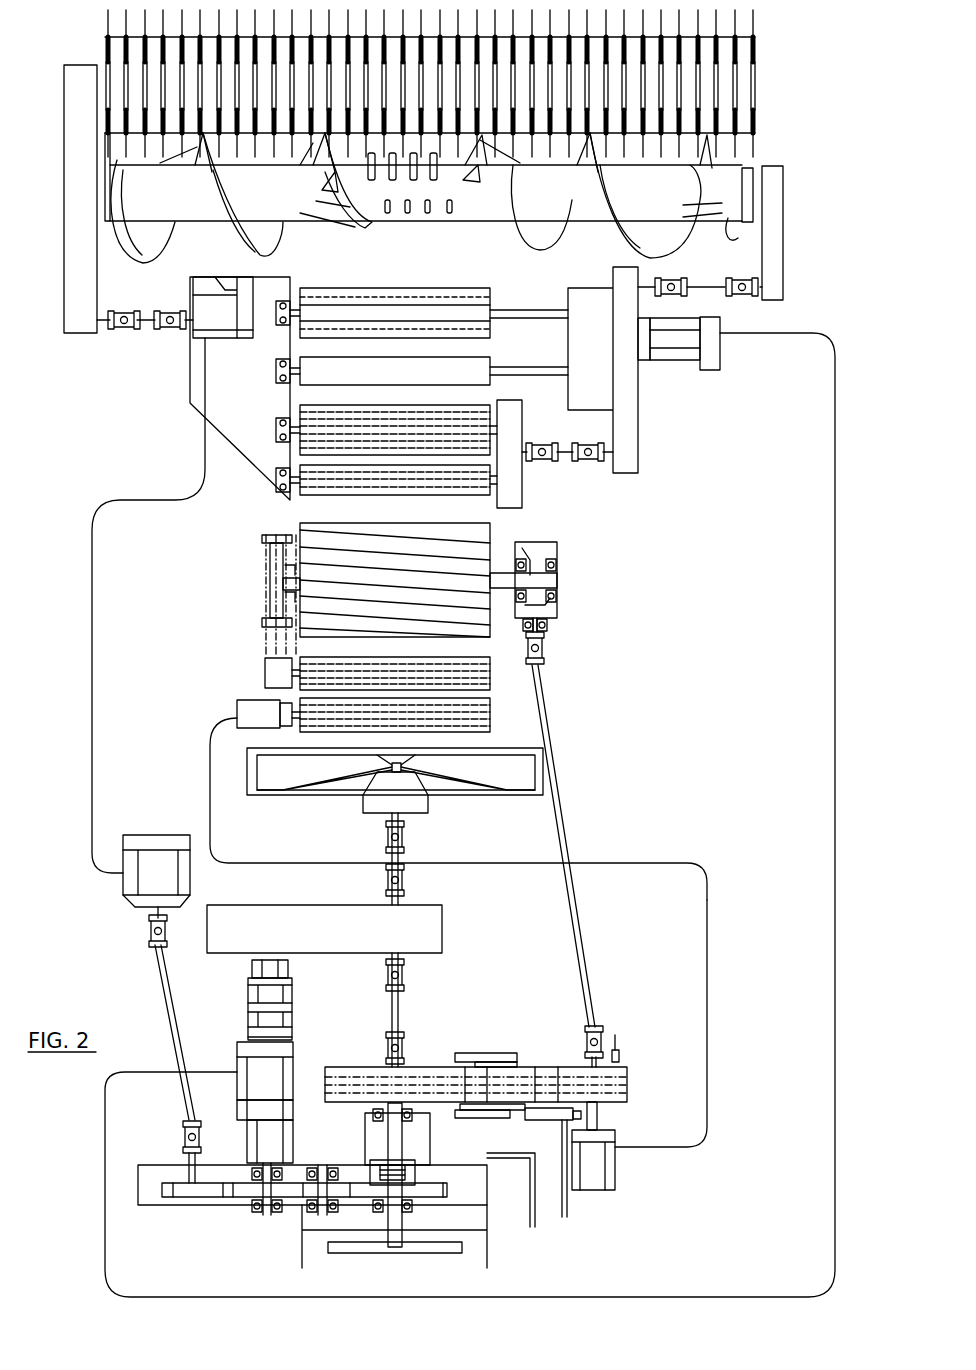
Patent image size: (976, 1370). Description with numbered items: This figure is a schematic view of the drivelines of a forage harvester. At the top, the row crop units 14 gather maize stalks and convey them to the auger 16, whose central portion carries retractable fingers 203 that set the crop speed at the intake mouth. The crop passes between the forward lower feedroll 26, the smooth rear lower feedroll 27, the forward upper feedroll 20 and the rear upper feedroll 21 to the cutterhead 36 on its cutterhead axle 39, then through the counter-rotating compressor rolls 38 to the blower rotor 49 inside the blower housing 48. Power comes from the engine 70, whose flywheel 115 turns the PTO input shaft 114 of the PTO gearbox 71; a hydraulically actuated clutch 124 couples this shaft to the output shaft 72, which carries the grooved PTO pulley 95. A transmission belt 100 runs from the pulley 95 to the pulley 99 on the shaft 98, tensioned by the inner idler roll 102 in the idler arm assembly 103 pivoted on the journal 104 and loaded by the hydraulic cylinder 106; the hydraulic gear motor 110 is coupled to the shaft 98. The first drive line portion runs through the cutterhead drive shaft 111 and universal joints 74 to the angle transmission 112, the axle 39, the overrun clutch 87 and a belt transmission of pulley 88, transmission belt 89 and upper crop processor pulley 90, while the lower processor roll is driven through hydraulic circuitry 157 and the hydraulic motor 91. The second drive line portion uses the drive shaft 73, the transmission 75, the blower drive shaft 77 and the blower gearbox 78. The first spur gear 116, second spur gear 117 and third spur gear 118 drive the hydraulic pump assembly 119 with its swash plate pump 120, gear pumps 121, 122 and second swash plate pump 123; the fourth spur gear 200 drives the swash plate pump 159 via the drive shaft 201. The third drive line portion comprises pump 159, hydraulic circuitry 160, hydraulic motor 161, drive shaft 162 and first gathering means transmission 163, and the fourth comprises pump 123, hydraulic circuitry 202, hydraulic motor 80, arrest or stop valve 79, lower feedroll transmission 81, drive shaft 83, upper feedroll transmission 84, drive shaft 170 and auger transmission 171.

The row crop units 14 is at (758, 52).
The auger 16 is at (760, 167).
The forward upper feedroll 20 is at (303, 420).
The rear upper feedroll 21 is at (333, 488).
The forward lower feedroll 26 is at (496, 321).
The smooth rear lower feedroll 27 is at (297, 382).
The cutterhead 36 is at (492, 532).
The compressor rolls 38 is at (487, 672).
The cutterhead axle 39 is at (557, 578).
The blower housing 48 is at (537, 797).
The blower rotor 49 is at (503, 796).
The engine 70 is at (310, 1250).
The PTO gearbox 71 is at (219, 1207).
The output shaft 72 is at (390, 1107).
The drive shaft 73 is at (402, 1008).
The universal joint 74 is at (548, 642).
The transmission 75 is at (442, 922).
The blower drive shaft 77 is at (402, 858).
The blower gearbox 78 is at (368, 808).
The arrest or stop valve 79 is at (722, 368).
The hydraulic motor 80 is at (668, 357).
The lower feedroll transmission 81 is at (633, 467).
The drive shaft 83 is at (566, 460).
The upper feedroll transmission 84 is at (522, 497).
The overrun clutch 87 is at (273, 580).
The pulley 88 is at (262, 627).
The transmission belt 89 is at (267, 638).
The upper crop processor pulley 90 is at (265, 675).
The hydraulic motor 91 is at (237, 708).
The grooved PTO pulley 95 is at (348, 1067).
The shaft 98 is at (597, 1117).
The pulley 99 is at (627, 1090).
The transmission belt 100 is at (545, 1068).
The inner idler roll 102 is at (528, 1067).
The idler arm assembly 103 is at (490, 1053).
The journal 104 is at (460, 1120).
The hydraulic cylinder 106 is at (548, 1121).
The hydraulic gear motor 110 is at (615, 1168).
The cutterhead drive shaft 111 is at (575, 882).
The angle transmission 112 is at (560, 603).
The PTO input shaft 114 is at (397, 1247).
The flywheel 115 is at (334, 1253).
The first spur gear 116 is at (445, 1192).
The second spur gear 117 is at (312, 1182).
The third spur gear 118 is at (247, 1190).
The hydraulic pump assembly 119 is at (176, 1089).
The swash plate pump 120 is at (237, 1113).
The gear pump 121 is at (253, 993).
The gear pump 122 is at (255, 970).
The second swash plate pump 123 is at (235, 1062).
The hydraulically actuated clutch 124 is at (418, 1172).
The hydraulic circuitry 157 is at (705, 968).
The hydraulic swash plate pump 159 is at (158, 833).
The hydraulic circuitry 160 is at (93, 632).
The hydraulic motor 161 is at (223, 333).
The drive shaft 162 is at (148, 328).
The first gathering means transmission 163 is at (97, 263).
The drive shaft 170 is at (706, 285).
The auger transmission 171 is at (777, 232).
The fourth spur gear 200 is at (188, 1193).
The drive shaft 201 is at (167, 1008).
The hydraulic circuitry 202 is at (833, 996).
The retractable fingers 203 is at (428, 213).